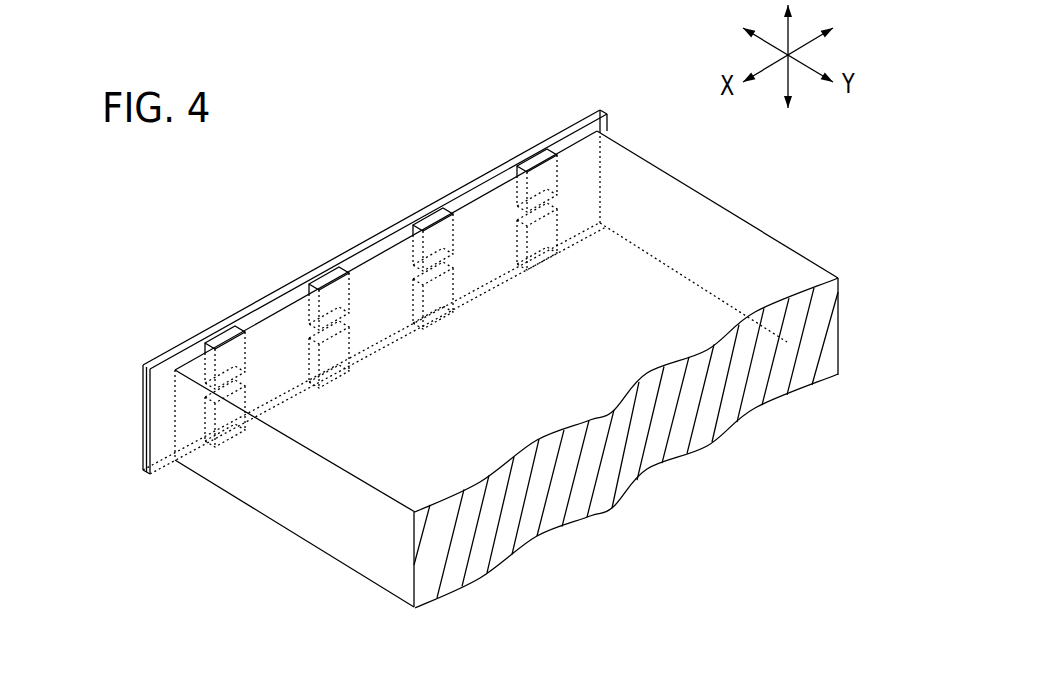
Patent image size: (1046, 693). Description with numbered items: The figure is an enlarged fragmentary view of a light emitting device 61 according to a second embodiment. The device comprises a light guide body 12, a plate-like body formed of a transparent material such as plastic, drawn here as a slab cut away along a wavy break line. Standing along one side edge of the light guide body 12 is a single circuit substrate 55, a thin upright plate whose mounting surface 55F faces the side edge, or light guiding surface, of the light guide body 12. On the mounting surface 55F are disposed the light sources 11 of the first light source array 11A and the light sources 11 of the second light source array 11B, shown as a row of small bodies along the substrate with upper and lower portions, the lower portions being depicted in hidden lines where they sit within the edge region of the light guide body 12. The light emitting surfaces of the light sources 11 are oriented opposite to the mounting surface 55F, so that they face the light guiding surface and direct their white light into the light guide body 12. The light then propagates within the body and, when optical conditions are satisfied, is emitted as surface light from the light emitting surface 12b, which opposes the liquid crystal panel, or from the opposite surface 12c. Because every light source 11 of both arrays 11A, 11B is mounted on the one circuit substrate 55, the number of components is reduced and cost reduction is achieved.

The light emitting device 61 is at (375, 162).
The circuit substrate 55 is at (173, 350).
The mounting surface 55F is at (160, 408).
The light source 11 is at (331, 272).
The first light source array 11A is at (222, 318).
The second light source array 11B is at (232, 433).
The light guide body 12 is at (320, 533).
The light emitting surface 12b is at (714, 226).
The surface opposite the light emitting surface 12c is at (355, 571).